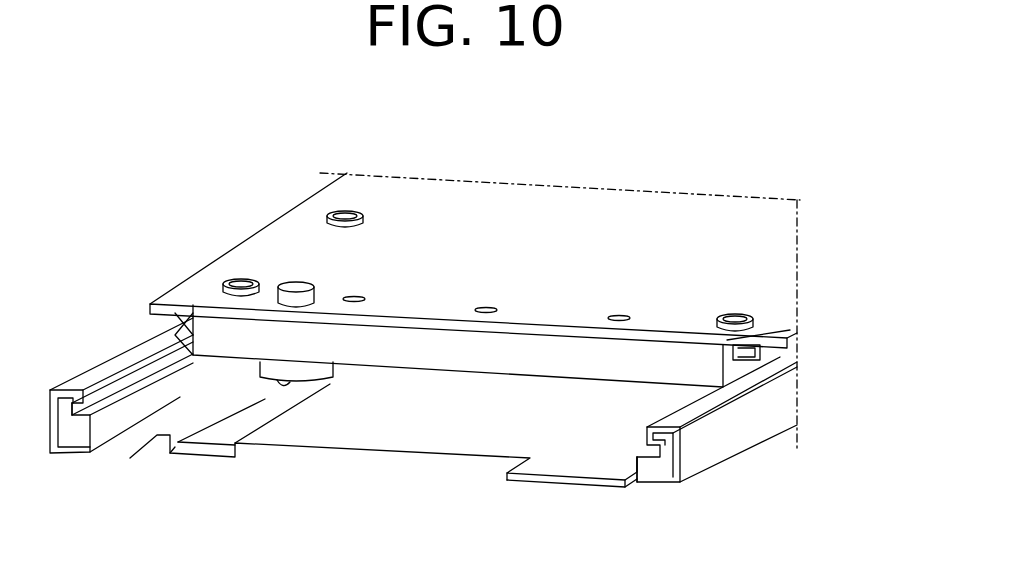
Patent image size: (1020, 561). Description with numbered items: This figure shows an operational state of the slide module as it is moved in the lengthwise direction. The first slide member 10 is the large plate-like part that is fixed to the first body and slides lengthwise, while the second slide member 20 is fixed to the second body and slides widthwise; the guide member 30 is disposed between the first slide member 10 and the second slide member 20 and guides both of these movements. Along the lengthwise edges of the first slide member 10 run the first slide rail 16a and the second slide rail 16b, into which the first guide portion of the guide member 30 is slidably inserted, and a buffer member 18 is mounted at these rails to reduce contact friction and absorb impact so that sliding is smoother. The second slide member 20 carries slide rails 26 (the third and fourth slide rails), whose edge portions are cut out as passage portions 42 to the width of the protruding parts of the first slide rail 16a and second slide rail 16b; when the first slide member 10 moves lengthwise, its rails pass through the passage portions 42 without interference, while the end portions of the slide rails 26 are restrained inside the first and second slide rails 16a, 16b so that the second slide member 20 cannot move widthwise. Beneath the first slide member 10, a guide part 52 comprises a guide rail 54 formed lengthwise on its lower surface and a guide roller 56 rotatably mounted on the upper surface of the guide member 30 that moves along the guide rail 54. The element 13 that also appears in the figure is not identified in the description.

The first slide member 10 is at (440, 420).
The guide groove 13 is at (655, 465).
The first slide rail 16a is at (100, 370).
The second slide rail 16b is at (695, 458).
The buffer member 18 is at (76, 425).
The second slide member 20 is at (452, 205).
The slide rail 26 is at (555, 350).
The guide member 30 is at (757, 353).
The passage portion 42 is at (173, 313).
The guide part 52 is at (325, 510).
The guide rail 54 is at (213, 430).
The guide roller 56 is at (295, 370).